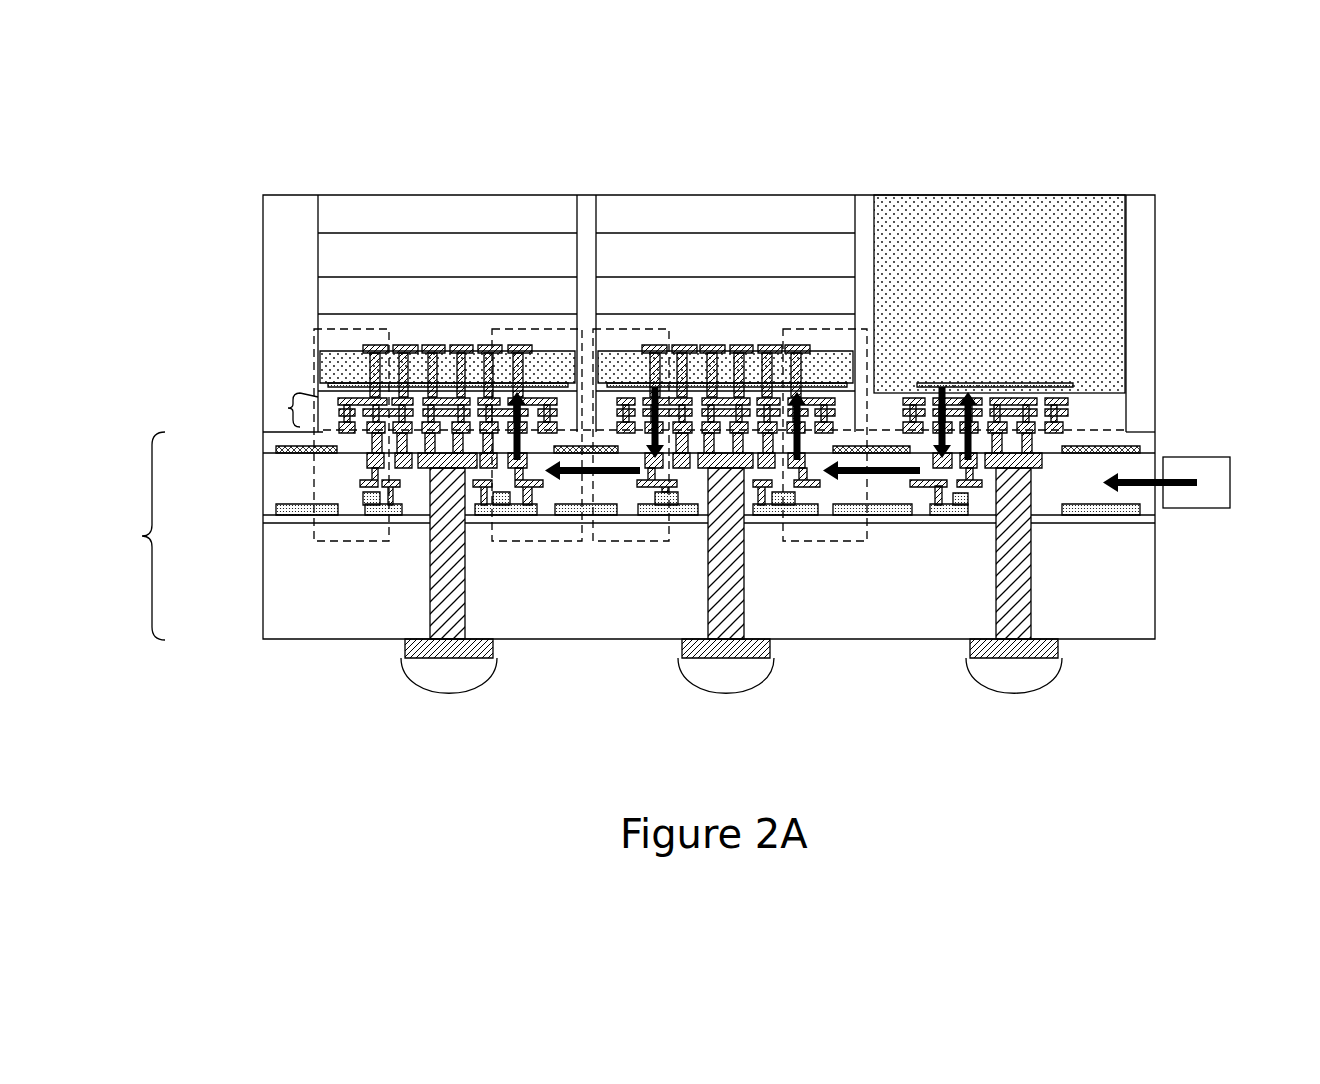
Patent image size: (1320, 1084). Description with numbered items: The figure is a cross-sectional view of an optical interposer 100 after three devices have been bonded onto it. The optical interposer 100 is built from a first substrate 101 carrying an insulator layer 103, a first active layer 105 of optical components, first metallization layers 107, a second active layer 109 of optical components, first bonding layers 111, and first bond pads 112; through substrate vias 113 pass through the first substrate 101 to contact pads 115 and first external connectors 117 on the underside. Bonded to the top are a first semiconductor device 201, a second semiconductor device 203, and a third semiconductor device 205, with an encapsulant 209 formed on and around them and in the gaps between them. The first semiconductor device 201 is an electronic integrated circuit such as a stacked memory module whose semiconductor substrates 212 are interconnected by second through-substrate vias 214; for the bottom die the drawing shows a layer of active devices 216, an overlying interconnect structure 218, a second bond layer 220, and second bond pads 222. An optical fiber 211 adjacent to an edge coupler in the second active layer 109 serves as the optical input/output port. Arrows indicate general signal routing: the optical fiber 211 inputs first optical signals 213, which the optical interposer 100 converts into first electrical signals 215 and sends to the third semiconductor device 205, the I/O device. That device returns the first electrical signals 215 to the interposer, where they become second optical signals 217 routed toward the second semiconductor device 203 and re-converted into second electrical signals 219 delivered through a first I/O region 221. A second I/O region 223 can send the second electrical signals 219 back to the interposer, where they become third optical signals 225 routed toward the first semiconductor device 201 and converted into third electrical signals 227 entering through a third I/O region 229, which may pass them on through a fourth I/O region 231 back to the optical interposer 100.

The optical interposer 100 is at (130, 536).
The first substrate 101 is at (1140, 585).
The insulator layer 103 is at (1145, 521).
The first active layer 105 is at (276, 510).
The first metallization layers 107 is at (275, 480).
The second active layer 109 is at (276, 449).
The first bonding layers 111 is at (1140, 437).
The first bond pads 112 is at (1110, 430).
The through substrate vias 113 is at (745, 600).
The contact pads 115 is at (765, 655).
The first external connectors 117 is at (467, 678).
The first semiconductor device 201 is at (440, 207).
The second semiconductor device 203 is at (710, 207).
The third semiconductor device 205 is at (970, 207).
The encapsulant 209 is at (275, 296).
The optical fiber 211 is at (1212, 471).
The semiconductor substrates 212 is at (325, 357).
The first optical signals 213 is at (1198, 485).
The second through-substrate vias 214 is at (522, 390).
The first electrical signals 215 is at (942, 385).
The layer of active devices 216 is at (325, 383).
The second optical signals 217 is at (887, 472).
The interconnect structure 218 is at (288, 408).
The second electrical signals 219 is at (760, 412).
The second bond layer 220 is at (318, 427).
The first I/O region 221 is at (790, 331).
The second bond pads 222 is at (345, 415).
The second I/O region 223 is at (628, 331).
The third optical signals 225 is at (612, 475).
The third electrical signals 227 is at (510, 410).
The third I/O region 229 is at (493, 331).
The fourth I/O region 231 is at (355, 331).